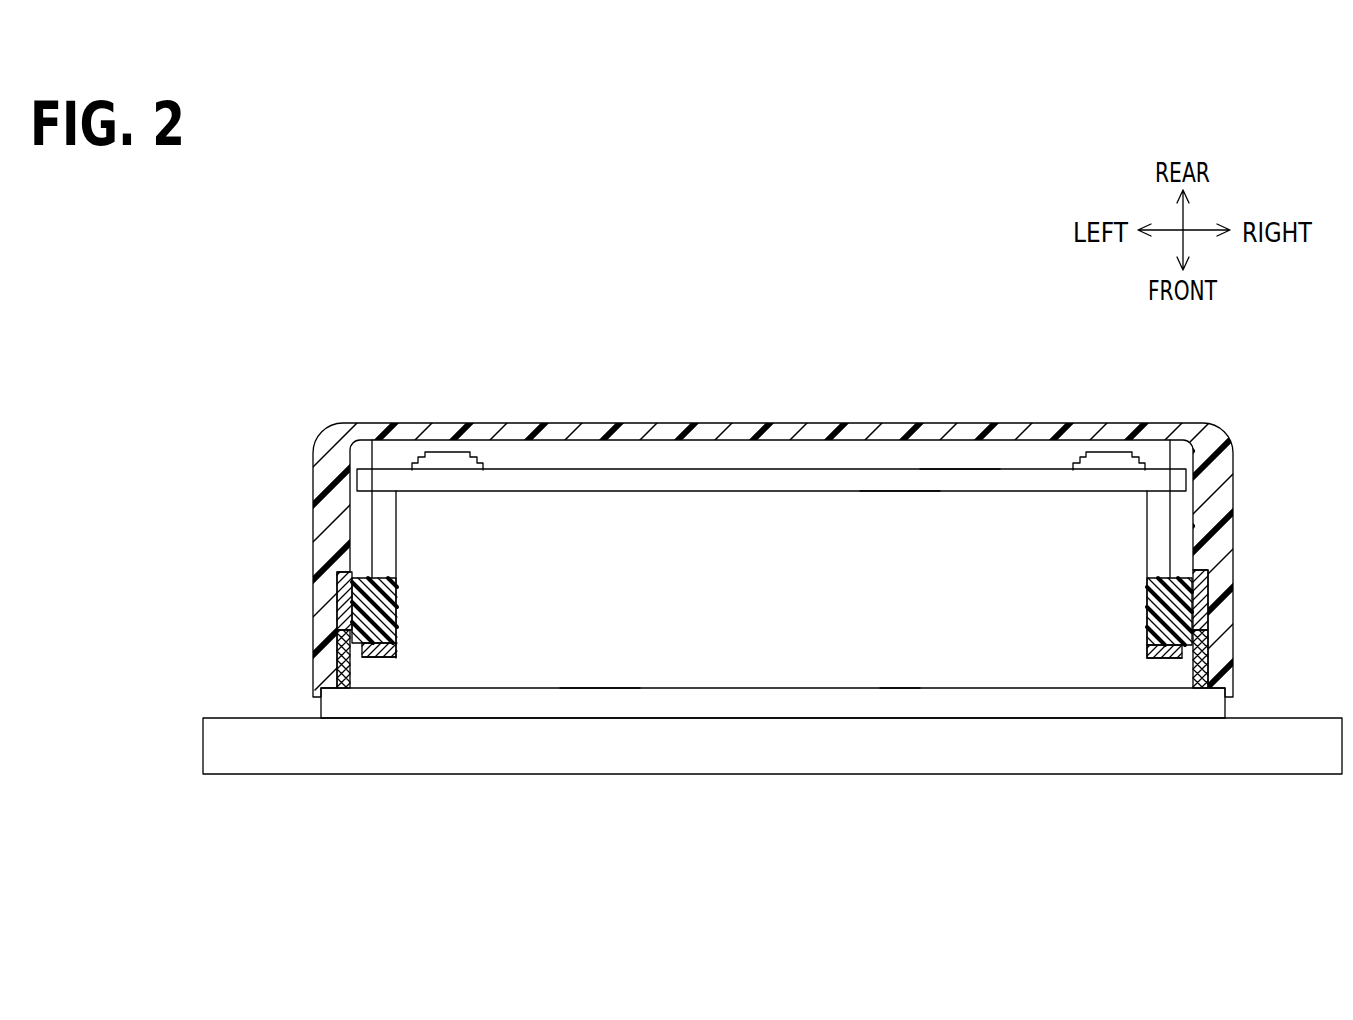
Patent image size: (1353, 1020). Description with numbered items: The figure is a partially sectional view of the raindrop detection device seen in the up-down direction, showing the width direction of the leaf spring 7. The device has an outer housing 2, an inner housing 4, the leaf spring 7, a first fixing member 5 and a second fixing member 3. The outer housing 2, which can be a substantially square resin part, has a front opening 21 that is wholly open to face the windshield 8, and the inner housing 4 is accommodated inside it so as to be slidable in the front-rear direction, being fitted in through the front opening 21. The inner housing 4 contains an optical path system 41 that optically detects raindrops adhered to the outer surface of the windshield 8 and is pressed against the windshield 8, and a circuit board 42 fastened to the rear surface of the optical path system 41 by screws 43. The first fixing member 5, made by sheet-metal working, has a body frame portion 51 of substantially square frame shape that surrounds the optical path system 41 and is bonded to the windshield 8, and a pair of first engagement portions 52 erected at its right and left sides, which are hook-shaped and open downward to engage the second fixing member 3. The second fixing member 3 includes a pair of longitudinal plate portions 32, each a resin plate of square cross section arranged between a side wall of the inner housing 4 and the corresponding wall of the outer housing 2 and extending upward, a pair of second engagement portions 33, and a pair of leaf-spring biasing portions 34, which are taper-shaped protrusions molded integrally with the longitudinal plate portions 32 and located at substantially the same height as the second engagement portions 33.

The outer housing 2 is at (1033, 433).
The second fixing member 3 is at (406, 584).
The inner housing 4 is at (815, 469).
The optical path system 41 is at (907, 512).
The circuit board 42 is at (957, 483).
The screws 43 is at (443, 453).
The first fixing member 5 is at (627, 674).
The body frame portion 51 is at (577, 703).
The first engagement portions 52 is at (340, 660).
The leaf spring 7 is at (381, 658).
The windshield 8 is at (790, 745).
The front opening 21 is at (480, 692).
The longitudinal plate portions 32 is at (396, 602).
The second engagement portions 33 is at (337, 608).
The leaf-spring biasing portions 34 is at (397, 646).